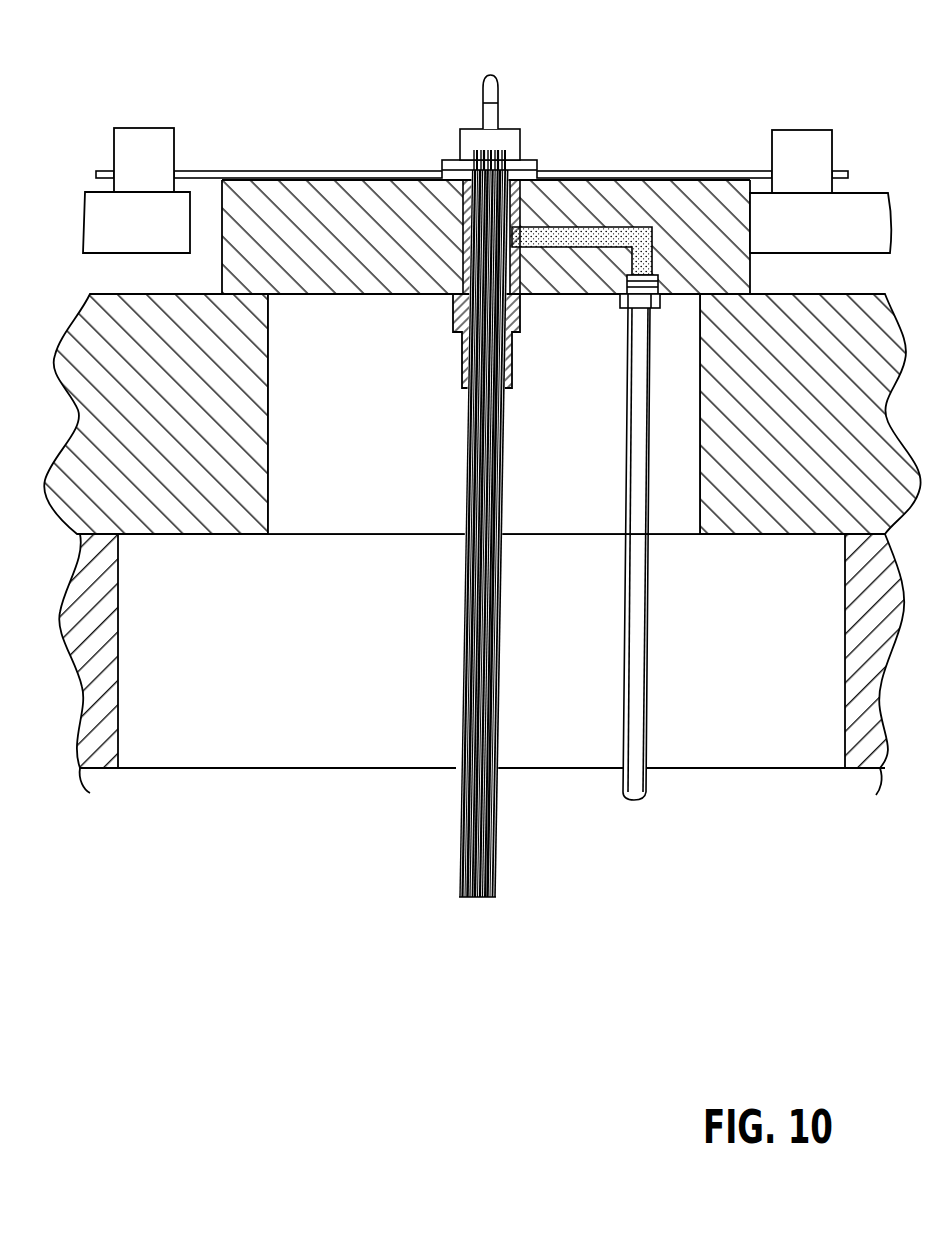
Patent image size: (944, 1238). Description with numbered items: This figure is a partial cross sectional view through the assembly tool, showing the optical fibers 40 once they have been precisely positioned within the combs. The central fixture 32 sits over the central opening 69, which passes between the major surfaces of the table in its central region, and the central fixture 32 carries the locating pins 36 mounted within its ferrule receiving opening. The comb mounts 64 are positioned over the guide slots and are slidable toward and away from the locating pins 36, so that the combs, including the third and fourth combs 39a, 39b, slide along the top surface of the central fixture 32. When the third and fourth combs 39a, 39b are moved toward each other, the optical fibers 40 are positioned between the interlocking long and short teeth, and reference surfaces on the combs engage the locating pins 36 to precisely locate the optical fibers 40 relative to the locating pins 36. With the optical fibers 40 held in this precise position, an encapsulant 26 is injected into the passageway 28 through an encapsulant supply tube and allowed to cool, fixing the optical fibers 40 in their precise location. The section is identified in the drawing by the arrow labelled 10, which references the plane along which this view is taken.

The sleeve / ferrule 10 is at (524, 343).
The encapsulant 26 is at (623, 227).
The passageway 28 is at (513, 227).
The central fixture 32 is at (222, 228).
The locating pins 36 is at (498, 88).
The third comb 39a is at (712, 173).
The fourth comb 39b is at (330, 172).
The optical fibers 40 is at (487, 897).
The comb mounts 64 is at (82, 215).
The central opening 69 is at (380, 439).